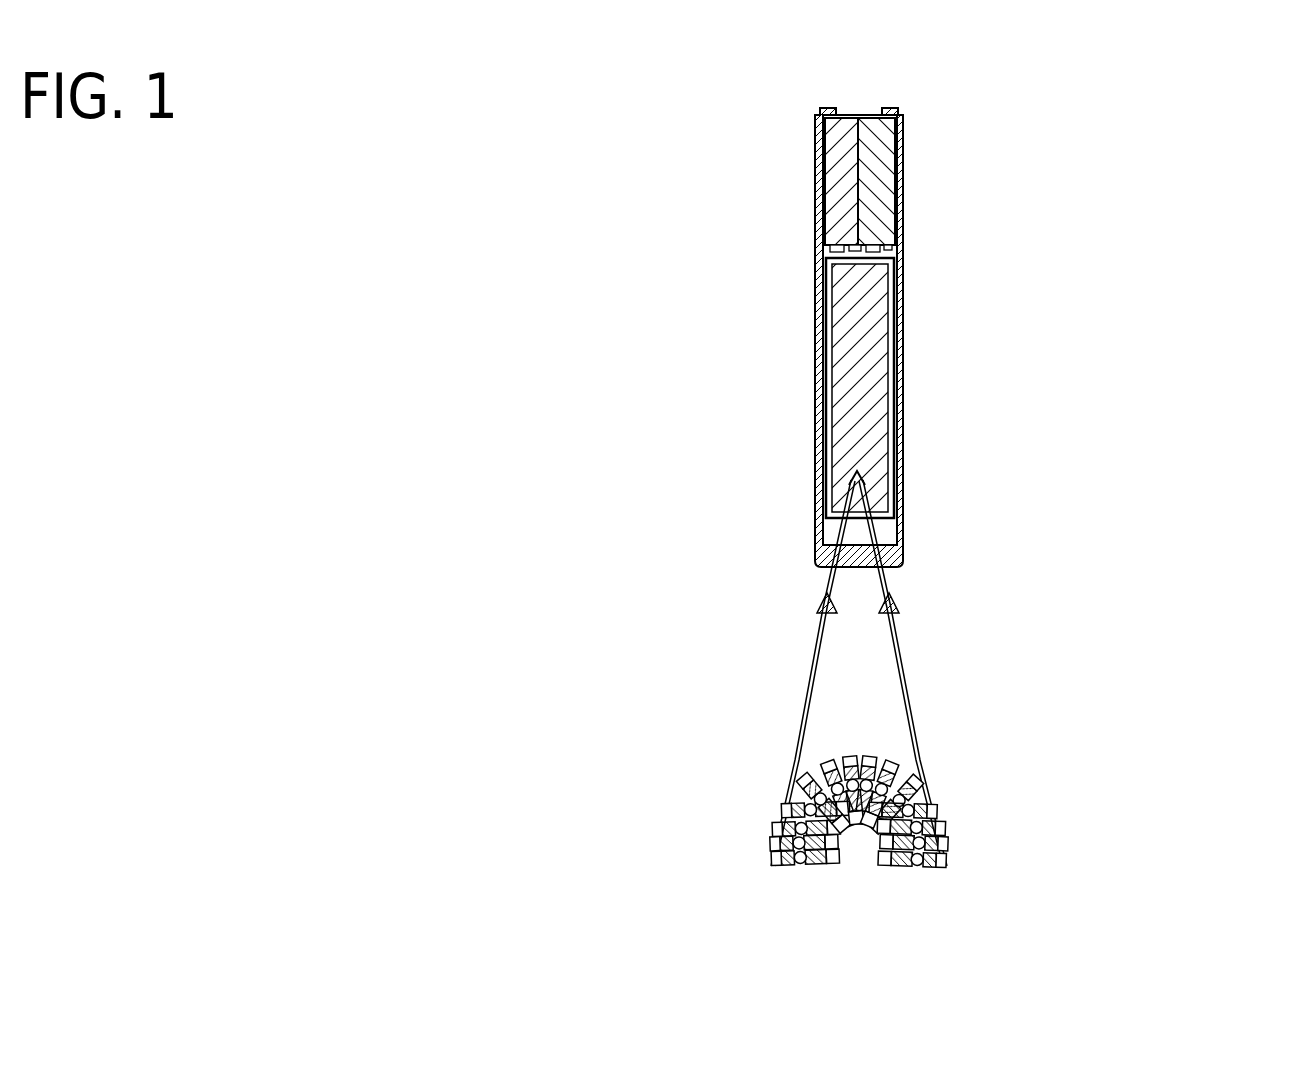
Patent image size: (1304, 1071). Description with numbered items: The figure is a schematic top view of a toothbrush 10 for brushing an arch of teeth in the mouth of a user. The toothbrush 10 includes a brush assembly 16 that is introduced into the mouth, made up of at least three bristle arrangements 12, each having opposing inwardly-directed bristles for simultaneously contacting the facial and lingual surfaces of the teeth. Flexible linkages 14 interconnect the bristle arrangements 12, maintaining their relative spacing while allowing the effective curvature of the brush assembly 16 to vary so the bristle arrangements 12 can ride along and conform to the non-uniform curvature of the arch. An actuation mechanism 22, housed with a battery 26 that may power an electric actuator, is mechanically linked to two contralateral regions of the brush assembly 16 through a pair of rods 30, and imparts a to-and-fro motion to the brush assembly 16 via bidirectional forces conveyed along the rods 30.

The toothbrush 10 is at (1142, 300).
The bristle arrangements 12 is at (862, 857).
The flexible linkages 14 is at (781, 789).
The brush assembly 16 is at (991, 845).
The actuation mechanism 22 is at (872, 332).
The battery 26 is at (821, 169).
The rods 30 is at (779, 651).